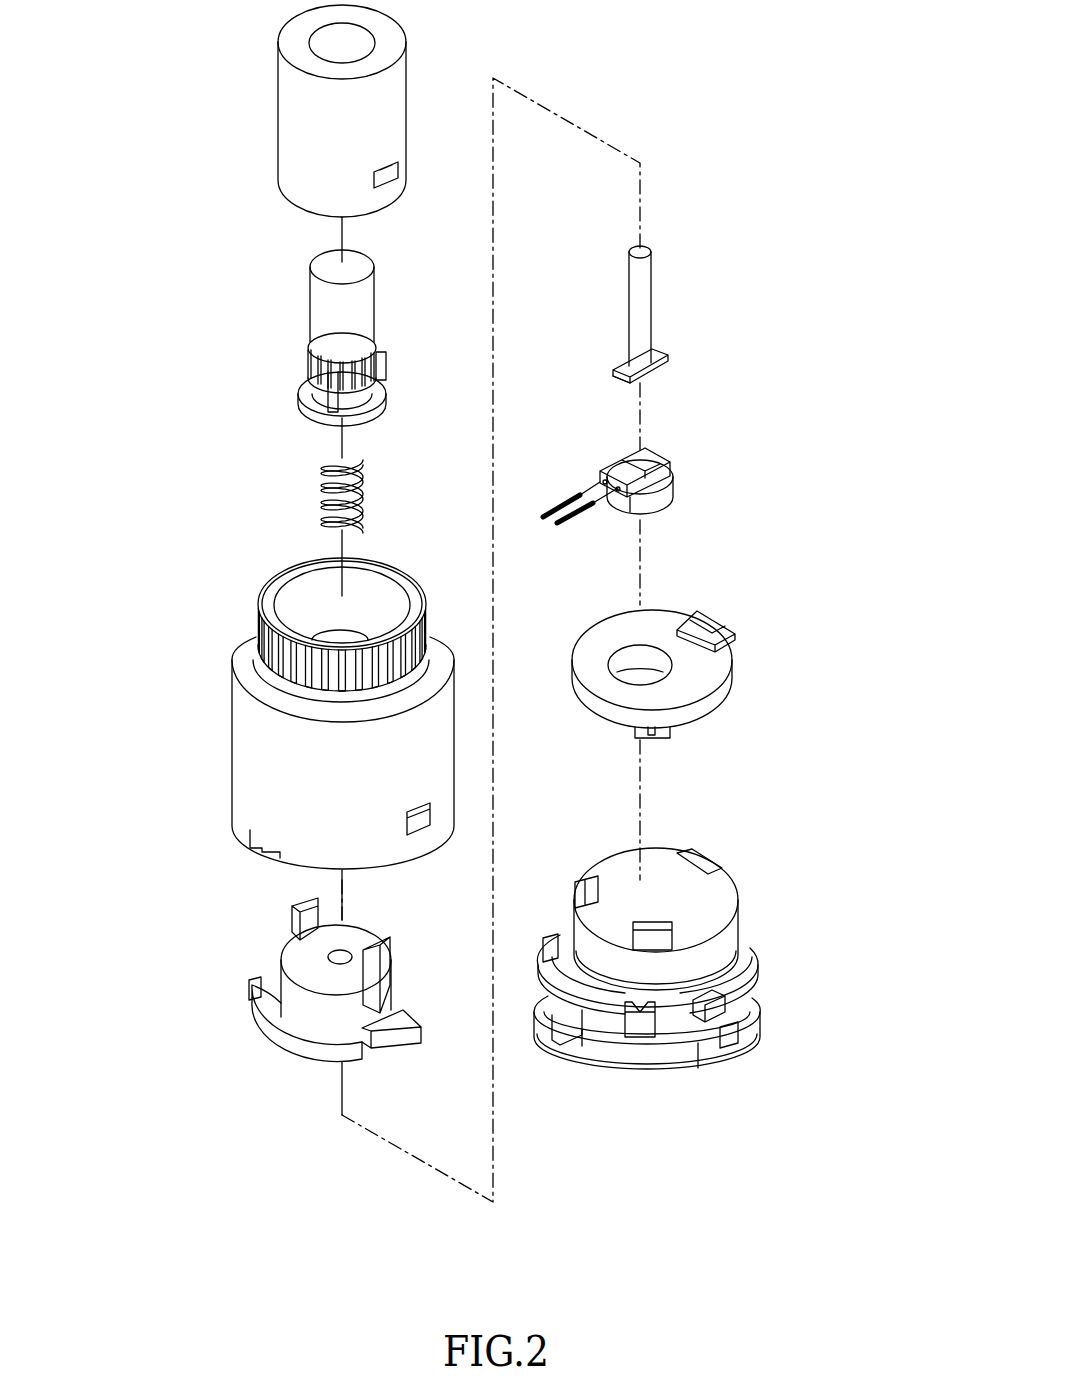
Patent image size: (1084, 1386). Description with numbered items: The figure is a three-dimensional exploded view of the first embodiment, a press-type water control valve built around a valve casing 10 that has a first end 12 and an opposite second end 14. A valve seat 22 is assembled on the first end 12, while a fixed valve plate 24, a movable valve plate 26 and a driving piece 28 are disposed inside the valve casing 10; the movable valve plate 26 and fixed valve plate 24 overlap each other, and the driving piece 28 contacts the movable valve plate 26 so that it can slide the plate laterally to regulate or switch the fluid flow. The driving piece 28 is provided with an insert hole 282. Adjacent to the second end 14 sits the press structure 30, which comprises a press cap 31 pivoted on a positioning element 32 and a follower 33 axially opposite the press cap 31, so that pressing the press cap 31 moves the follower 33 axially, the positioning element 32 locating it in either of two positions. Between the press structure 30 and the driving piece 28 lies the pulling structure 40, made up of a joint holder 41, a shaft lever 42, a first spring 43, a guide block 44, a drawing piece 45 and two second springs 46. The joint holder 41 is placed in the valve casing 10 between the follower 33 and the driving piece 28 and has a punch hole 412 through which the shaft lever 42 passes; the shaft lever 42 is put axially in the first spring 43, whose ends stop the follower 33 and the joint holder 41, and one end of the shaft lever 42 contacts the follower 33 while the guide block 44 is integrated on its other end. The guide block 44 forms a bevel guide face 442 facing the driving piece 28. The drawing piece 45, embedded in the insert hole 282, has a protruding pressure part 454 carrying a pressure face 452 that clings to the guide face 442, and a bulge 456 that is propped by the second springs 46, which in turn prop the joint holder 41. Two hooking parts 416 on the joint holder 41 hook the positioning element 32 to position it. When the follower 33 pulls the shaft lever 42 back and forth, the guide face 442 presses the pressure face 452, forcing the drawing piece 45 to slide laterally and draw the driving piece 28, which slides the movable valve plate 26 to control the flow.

The valve casing 10 is at (233, 735).
The first end 12 is at (243, 840).
The second end 14 is at (268, 595).
The valve seat 22 is at (740, 1030).
The fixed valve plate 24 is at (725, 983).
The movable valve plate 26 is at (727, 935).
The driving piece 28 is at (713, 702).
The insert hole 282 is at (663, 670).
The press structure 30 is at (252, 250).
The press cap 31 is at (310, 300).
The positioning element 32 is at (278, 108).
The follower 33 is at (300, 396).
The pulling structure 40 is at (724, 402).
The joint holder 41 is at (292, 996).
The punch hole 412 is at (328, 958).
The hooking parts 416 is at (290, 913).
The shaft lever 42 is at (647, 305).
The first spring 43 is at (322, 490).
The guide block 44 is at (665, 360).
The guide face 442 is at (632, 378).
The drawing piece 45 is at (663, 503).
The pressure face 452 is at (650, 458).
The pressure part 454 is at (658, 468).
The bulge 456 is at (632, 510).
The second springs 46 is at (565, 500).